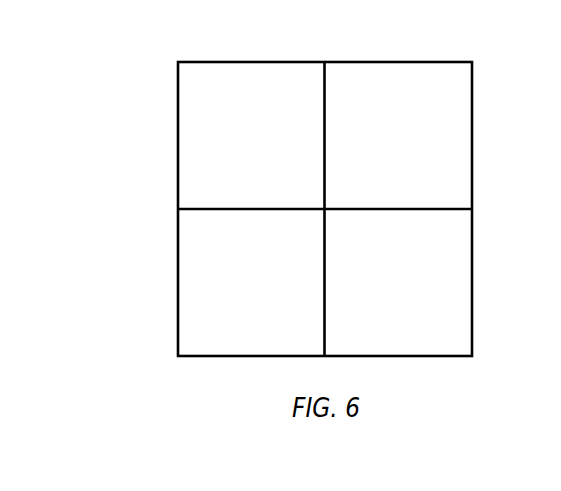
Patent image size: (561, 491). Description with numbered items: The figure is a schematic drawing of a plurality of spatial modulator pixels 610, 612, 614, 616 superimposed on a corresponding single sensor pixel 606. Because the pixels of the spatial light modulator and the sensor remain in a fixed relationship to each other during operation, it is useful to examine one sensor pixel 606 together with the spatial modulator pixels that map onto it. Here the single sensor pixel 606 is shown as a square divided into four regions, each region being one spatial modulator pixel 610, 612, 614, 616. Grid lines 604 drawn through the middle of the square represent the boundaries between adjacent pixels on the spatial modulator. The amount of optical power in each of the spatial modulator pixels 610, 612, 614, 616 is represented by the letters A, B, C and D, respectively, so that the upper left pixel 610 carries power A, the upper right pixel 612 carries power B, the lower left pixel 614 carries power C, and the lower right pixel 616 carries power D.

The grid lines 604 is at (325, 187).
The single sensor pixel 606 is at (178, 113).
The spatial modulator pixel 610 is at (271, 75).
The spatial modulator pixel 612 is at (373, 78).
The spatial modulator pixel 614 is at (197, 302).
The spatial modulator pixel 616 is at (460, 302).